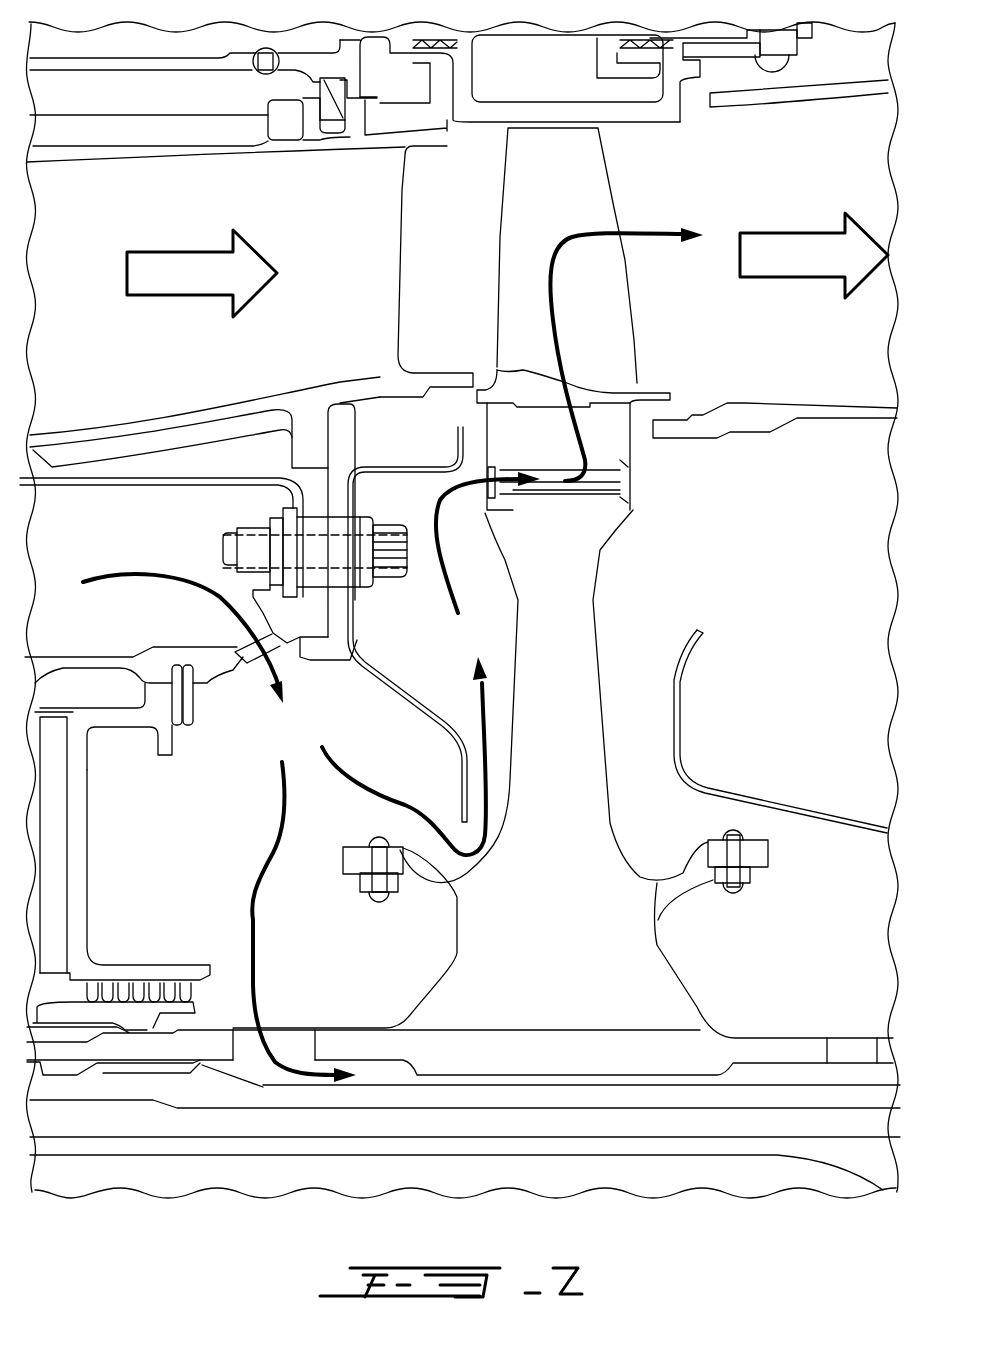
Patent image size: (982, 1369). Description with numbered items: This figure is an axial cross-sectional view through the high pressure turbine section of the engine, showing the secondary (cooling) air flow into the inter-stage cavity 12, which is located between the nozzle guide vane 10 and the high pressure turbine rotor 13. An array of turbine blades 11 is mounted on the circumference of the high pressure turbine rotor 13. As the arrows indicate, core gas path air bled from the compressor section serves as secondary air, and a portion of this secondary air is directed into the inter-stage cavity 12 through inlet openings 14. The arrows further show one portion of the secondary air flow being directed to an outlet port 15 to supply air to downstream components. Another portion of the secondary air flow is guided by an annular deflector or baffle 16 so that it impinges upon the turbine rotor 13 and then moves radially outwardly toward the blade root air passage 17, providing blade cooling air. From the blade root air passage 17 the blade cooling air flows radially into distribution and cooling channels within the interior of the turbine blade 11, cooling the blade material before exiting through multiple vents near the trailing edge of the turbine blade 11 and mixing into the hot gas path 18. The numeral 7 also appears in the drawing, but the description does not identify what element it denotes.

The bolt assembly 7 is at (119, 543).
The nozzle guide vane 10 is at (192, 379).
The turbine blade 11 is at (607, 157).
The inter-stage cavity 12 is at (188, 851).
The high pressure turbine rotor 13 is at (558, 823).
The inlet openings 14 is at (250, 647).
The outlet port 15 is at (242, 1065).
The annular deflector or baffle 16 is at (410, 688).
The blade root air passage 17 is at (552, 494).
The hot gas path 18 is at (749, 345).